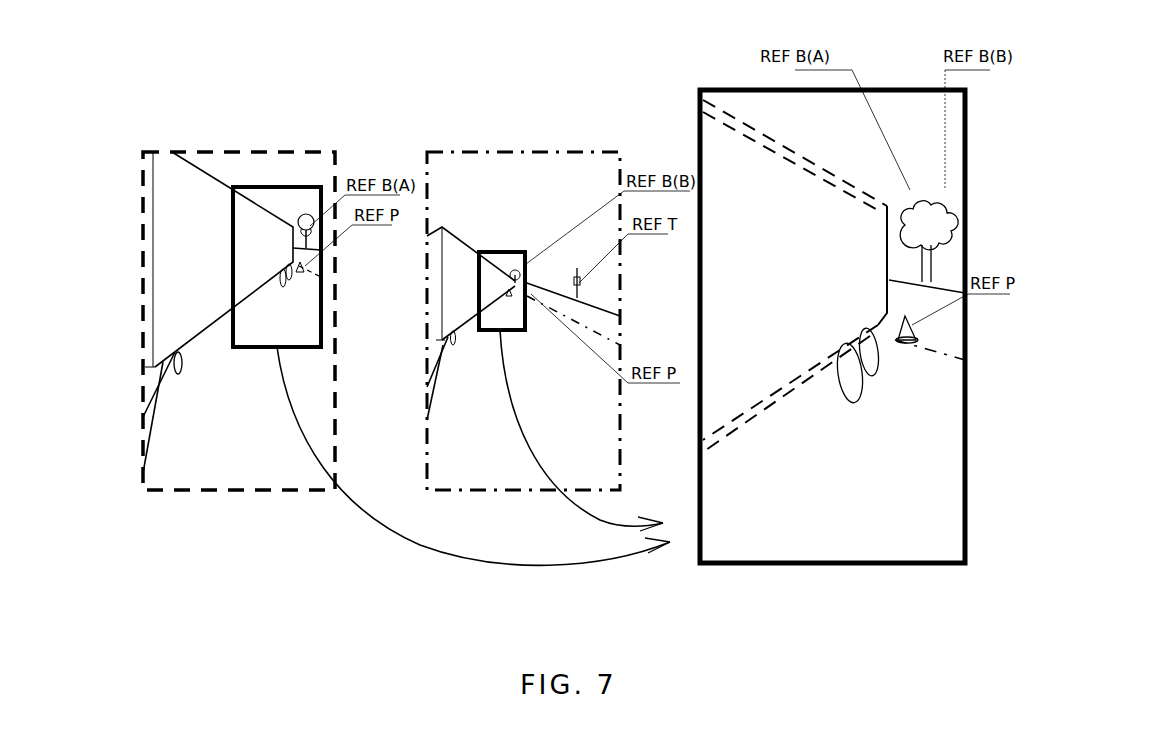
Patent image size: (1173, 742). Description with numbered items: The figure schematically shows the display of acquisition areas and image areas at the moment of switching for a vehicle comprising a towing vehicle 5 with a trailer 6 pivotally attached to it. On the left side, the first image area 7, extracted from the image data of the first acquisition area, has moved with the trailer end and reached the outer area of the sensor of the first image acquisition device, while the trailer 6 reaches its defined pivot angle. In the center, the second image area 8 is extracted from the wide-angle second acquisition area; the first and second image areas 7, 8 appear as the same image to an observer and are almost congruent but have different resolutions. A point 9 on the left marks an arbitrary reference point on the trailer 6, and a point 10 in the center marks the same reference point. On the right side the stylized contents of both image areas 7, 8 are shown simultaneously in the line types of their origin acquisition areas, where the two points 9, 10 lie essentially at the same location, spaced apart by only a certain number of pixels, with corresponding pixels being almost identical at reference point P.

The towing vehicle 5 is at (157, 415).
The trailer 6 is at (198, 232).
The first image area 7 is at (318, 185).
The second image area 8 is at (512, 250).
The point 9 is at (250, 297).
The point 10 is at (487, 310).